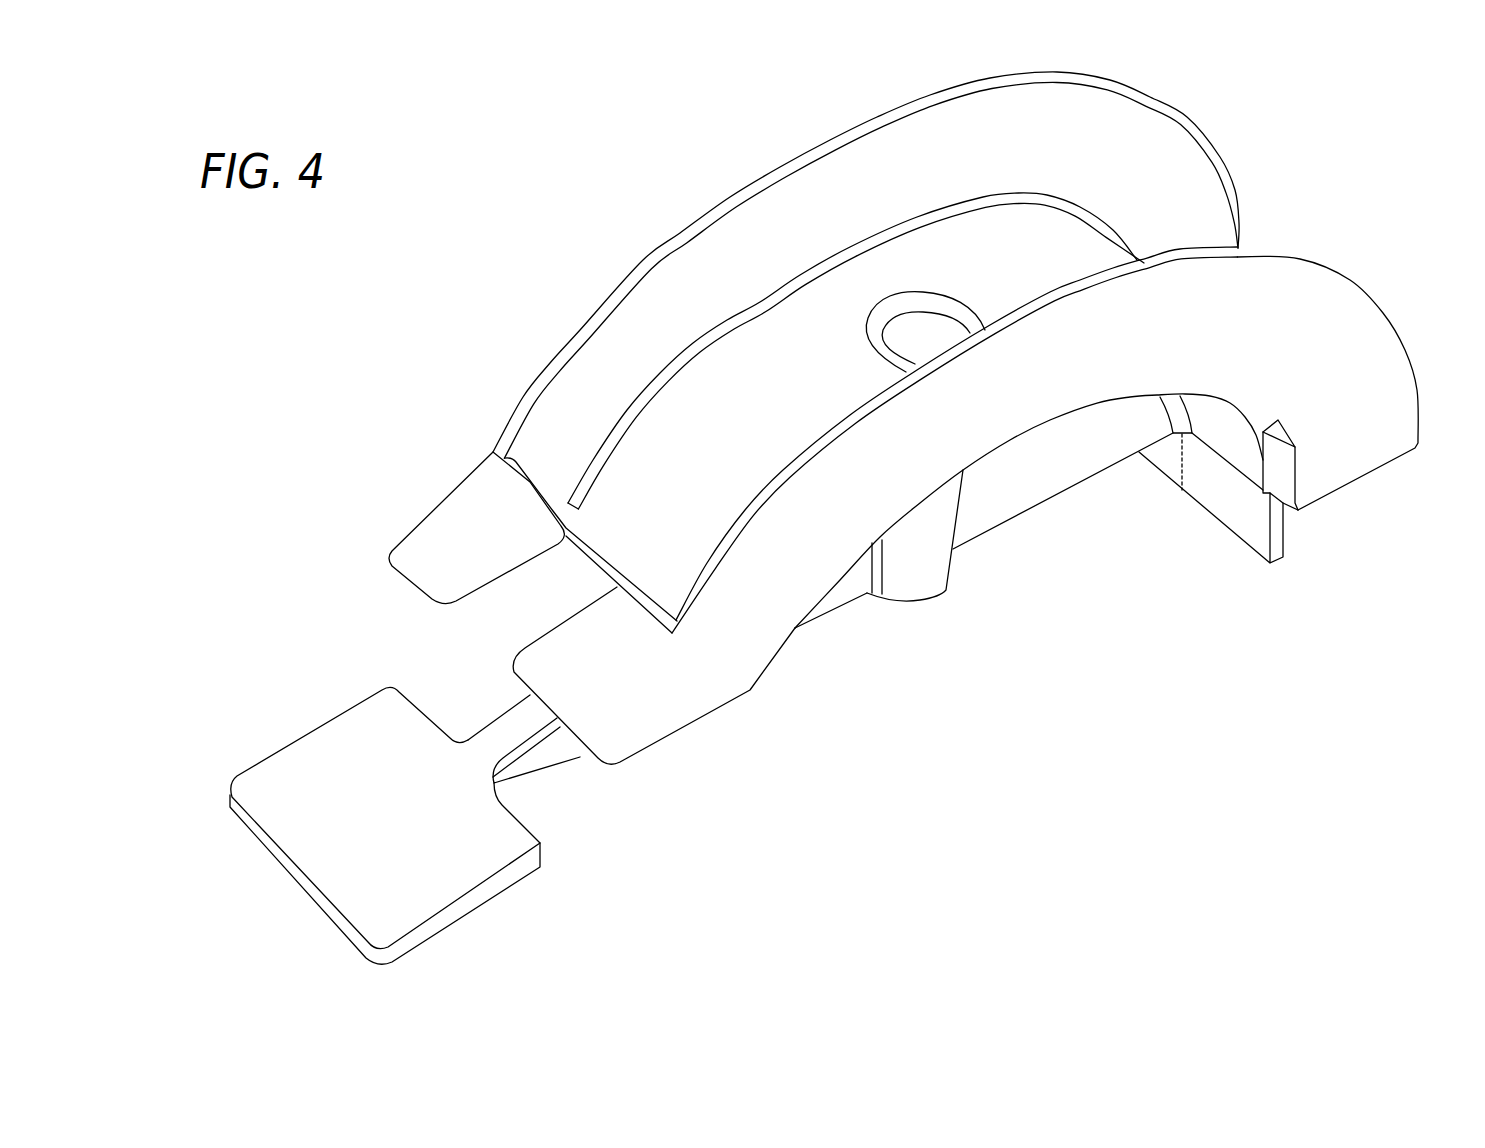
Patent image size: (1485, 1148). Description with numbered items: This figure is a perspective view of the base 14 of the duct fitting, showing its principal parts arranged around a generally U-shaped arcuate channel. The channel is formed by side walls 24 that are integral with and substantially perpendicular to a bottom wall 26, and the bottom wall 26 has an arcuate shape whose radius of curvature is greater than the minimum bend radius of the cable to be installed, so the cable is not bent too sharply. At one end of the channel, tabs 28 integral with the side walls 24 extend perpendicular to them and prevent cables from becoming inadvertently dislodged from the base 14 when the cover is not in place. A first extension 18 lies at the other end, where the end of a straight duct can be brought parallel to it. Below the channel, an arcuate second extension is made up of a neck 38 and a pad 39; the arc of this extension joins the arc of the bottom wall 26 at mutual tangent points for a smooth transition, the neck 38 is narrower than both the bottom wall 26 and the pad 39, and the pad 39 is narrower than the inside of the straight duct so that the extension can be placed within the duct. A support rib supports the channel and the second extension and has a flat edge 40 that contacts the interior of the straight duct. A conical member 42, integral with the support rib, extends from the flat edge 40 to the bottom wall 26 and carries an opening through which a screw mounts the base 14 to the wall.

The base 14 is at (610, 182).
The first extension 18 is at (1228, 508).
The side walls 24 is at (1160, 143).
The bottom wall 26 is at (757, 457).
The tabs 28 is at (460, 517).
The neck 38 is at (510, 732).
The pad 39 is at (423, 897).
The flat edge 40 is at (1022, 513).
The conical member 42 is at (917, 570).